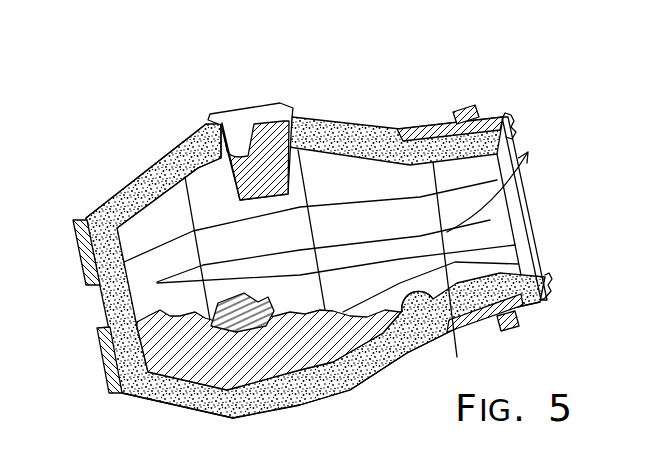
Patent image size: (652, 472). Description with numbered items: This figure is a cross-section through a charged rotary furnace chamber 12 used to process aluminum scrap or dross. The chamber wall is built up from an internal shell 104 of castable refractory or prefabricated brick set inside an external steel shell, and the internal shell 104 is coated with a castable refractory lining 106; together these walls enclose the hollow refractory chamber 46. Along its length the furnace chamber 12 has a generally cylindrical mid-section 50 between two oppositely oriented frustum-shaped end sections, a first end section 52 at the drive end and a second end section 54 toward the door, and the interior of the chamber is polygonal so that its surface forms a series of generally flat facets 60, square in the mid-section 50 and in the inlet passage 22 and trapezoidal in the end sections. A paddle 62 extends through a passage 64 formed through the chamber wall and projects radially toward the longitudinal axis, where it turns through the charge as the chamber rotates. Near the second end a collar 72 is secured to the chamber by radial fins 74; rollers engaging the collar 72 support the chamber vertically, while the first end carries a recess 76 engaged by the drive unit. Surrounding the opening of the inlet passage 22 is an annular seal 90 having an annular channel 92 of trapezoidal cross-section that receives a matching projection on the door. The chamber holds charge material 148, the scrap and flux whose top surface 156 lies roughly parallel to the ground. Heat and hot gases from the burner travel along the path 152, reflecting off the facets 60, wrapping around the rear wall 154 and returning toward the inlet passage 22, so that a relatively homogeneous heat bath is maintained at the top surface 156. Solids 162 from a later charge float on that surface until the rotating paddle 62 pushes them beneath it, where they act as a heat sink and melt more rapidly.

The furnace chamber 12 is at (122, 180).
The inlet passage 22 is at (477, 214).
The refractory chamber 46 is at (273, 249).
The mid-section 50 is at (198, 128).
The first end section 52 is at (153, 157).
The second end section 54 is at (367, 126).
The facets 60 is at (197, 165).
The paddle 62 is at (228, 173).
The passage 64 is at (250, 153).
The collar 72 is at (460, 104).
The radial fins 74 is at (425, 128).
The recess 76 is at (98, 318).
The annular seal 90 is at (510, 120).
The annular channel 92 is at (514, 132).
The internal shell 104 is at (165, 392).
The castable refractory lining 106 is at (137, 238).
The charge material 148 is at (323, 355).
The path 152 is at (334, 250).
The rear wall 154 is at (130, 283).
The top surface 156 is at (440, 305).
The solids 162 is at (252, 320).